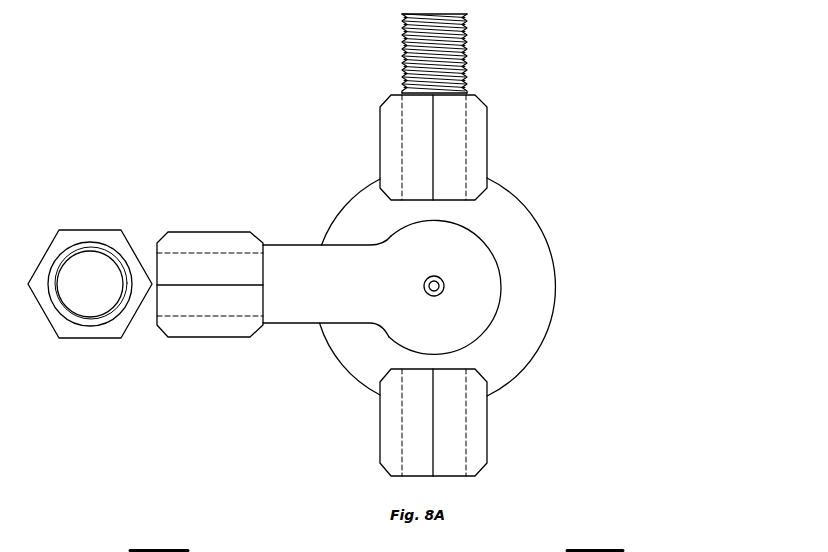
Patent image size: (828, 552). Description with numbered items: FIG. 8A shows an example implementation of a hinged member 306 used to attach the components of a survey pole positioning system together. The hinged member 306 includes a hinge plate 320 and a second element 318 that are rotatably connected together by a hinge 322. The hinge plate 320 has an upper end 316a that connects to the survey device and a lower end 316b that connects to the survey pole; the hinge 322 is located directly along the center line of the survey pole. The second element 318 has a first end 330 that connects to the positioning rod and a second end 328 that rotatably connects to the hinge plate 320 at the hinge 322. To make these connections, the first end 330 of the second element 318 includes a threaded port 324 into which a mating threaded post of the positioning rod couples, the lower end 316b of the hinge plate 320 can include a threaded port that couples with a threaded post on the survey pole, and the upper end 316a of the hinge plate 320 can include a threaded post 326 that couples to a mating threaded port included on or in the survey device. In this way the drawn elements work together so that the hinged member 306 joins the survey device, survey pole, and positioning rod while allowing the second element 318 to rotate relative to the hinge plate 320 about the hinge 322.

The hinged member 306 is at (630, 212).
The upper end 316a is at (482, 152).
The lower end 316b is at (480, 448).
The second element 318 is at (293, 258).
The hinge plate 320 is at (527, 337).
The hinge 322 is at (427, 283).
The threaded port 324 is at (88, 280).
The threaded post 326 is at (467, 48).
The second end 328 is at (485, 263).
The first end 330 is at (193, 237).